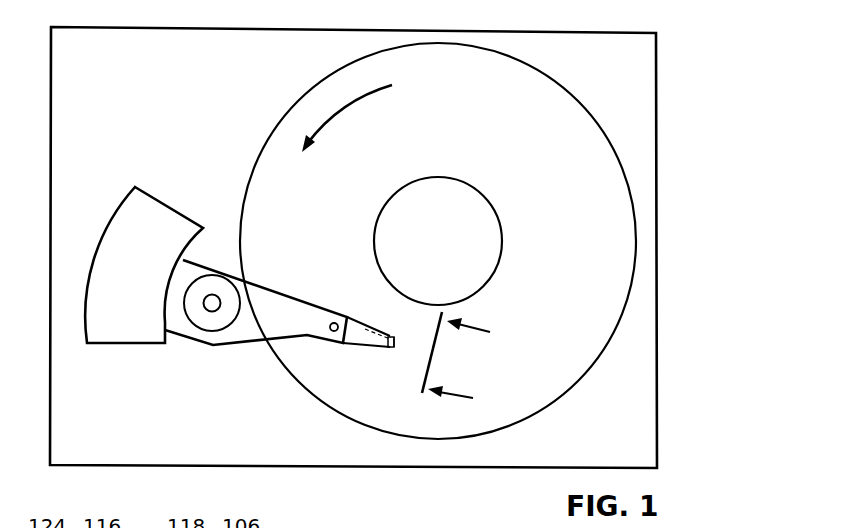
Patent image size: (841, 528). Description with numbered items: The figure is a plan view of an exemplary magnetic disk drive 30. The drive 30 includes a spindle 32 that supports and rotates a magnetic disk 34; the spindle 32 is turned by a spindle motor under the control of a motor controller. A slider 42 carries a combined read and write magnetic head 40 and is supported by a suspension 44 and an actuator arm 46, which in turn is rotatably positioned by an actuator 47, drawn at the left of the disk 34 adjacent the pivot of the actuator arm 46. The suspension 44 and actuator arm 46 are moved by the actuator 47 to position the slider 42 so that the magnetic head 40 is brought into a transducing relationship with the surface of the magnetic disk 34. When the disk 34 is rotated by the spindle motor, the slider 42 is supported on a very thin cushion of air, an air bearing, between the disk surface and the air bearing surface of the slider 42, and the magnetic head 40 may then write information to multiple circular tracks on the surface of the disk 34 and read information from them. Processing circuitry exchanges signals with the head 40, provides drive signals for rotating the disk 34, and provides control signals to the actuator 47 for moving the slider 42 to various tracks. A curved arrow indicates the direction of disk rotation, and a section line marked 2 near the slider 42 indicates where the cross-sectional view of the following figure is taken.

The magnetic disk drive 30 is at (677, 65).
The spindle 32 is at (475, 188).
The magnetic disk 34 is at (580, 263).
The magnetic head 40 is at (397, 346).
The slider 42 is at (393, 340).
The suspension 44 is at (353, 348).
The actuator arm 46 is at (297, 301).
The actuator 47 is at (175, 213).
The section line 2- 2 is at (464, 365).